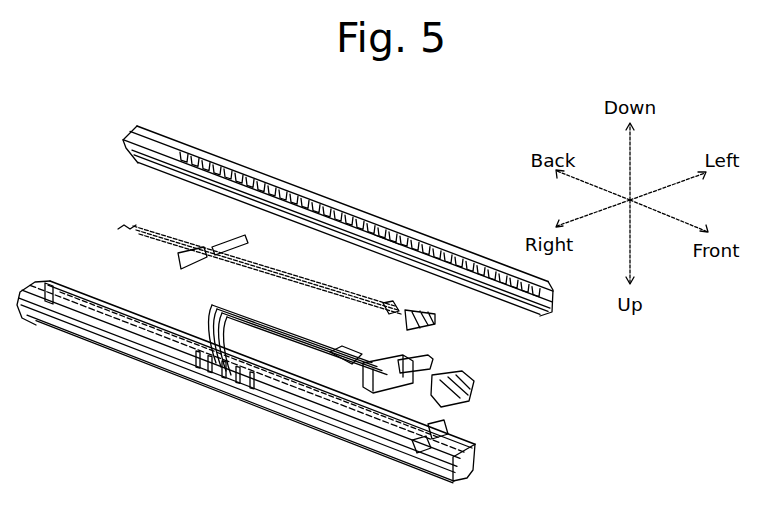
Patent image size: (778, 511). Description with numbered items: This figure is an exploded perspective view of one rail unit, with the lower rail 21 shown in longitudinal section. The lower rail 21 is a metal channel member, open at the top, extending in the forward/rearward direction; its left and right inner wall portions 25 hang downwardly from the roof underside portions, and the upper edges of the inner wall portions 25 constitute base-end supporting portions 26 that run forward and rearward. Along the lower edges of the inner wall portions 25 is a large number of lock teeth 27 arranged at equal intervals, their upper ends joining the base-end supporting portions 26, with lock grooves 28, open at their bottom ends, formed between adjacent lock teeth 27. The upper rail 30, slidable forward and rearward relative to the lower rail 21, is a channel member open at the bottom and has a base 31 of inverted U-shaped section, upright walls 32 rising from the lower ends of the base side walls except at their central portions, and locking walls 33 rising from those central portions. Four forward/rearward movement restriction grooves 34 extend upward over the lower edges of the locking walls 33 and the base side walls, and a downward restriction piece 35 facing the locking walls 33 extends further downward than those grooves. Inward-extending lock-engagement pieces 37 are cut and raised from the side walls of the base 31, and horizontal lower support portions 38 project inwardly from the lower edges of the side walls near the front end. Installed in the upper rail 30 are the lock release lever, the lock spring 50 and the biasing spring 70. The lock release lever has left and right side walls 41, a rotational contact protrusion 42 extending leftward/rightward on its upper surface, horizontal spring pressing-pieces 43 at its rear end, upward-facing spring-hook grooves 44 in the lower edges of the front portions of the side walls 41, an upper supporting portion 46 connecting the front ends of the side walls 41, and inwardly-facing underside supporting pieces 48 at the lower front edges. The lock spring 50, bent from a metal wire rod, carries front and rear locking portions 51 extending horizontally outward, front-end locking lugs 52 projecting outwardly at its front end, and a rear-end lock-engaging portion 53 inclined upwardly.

The lower rail 21 is at (430, 242).
The inner wall portions 25 is at (132, 153).
The base-end supporting portions 26 is at (520, 312).
The lock teeth 27 is at (340, 184).
The lock grooves 28 is at (386, 197).
The upper rail 30 is at (308, 420).
The base 31 is at (468, 480).
The upright walls 32 is at (120, 300).
The locking walls 33 is at (192, 382).
The forward/rearward movement restriction grooves 34 is at (200, 335).
The downward restriction piece 35 is at (222, 402).
The lock-engagement pieces 37 is at (313, 392).
The lower support portions 38 is at (442, 425).
The side walls 41 is at (340, 354).
The rotational contact protrusion 42 is at (362, 370).
The spring pressing-pieces 43 is at (215, 298).
The spring-hook grooves 44 is at (405, 363).
The upper supporting portion 46 is at (470, 396).
The underside supporting pieces 48 is at (455, 383).
The lock spring 50 is at (158, 220).
The locking portions 51 is at (245, 243).
The front-end locking lugs 52 is at (386, 304).
The rear-end lock-engaging portion 53 is at (118, 229).
The biasing spring 70 is at (440, 318).